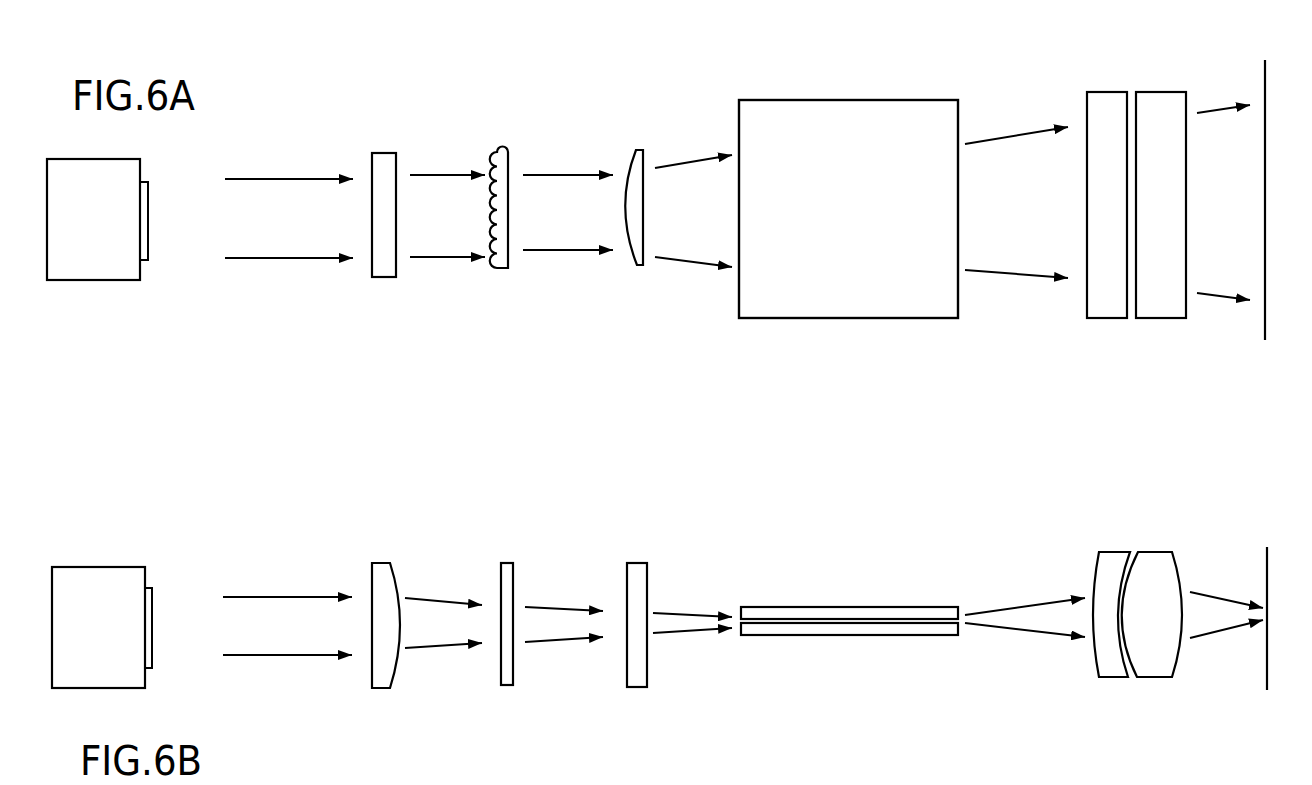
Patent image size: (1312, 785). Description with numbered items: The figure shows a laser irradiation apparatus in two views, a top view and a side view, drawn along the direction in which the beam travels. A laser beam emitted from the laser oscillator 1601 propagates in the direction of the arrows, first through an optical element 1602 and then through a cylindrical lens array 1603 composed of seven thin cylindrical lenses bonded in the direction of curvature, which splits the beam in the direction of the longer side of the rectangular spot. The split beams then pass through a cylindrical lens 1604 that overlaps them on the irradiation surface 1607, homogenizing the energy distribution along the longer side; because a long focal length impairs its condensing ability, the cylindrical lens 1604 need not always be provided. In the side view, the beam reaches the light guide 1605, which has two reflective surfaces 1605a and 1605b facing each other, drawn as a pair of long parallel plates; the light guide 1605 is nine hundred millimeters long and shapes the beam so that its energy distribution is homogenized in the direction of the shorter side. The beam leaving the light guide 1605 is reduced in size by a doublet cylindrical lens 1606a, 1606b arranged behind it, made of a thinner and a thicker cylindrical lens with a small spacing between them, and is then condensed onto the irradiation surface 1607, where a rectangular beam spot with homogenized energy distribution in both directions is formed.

In FIG. 6A, the laser oscillator 1601 is at (97, 316).
In FIG. 6B, the laser oscillator 1601 is at (102, 584).
In FIG. 6A, the collimator lens / optical element 1602 is at (386, 311).
In FIG. 6B, the collimator lens / optical element 1602 is at (386, 578).
In FIG. 6A, the cylindrical lens array 1603 is at (516, 308).
In FIG. 6B, the cylindrical lens array 1603 is at (507, 577).
In FIG. 6A, the cylindrical lens 1604 is at (641, 309).
In FIG. 6B, the cylindrical lens 1604 is at (637, 578).
In FIG. 6A, the light guide 1605 is at (902, 428).
In FIG. 6B, the light guide 1605 is at (849, 541).
In FIG. 6A, the reflective surface 1605a is at (857, 444).
In FIG. 6B, the reflective surface 1605a is at (849, 533).
In FIG. 6A, the reflective surface 1605b is at (857, 481).
In FIG. 6B, the reflective surface 1605b is at (849, 556).
In FIG. 6A, the doublet cylindrical lens 1606a is at (1092, 278).
In FIG. 6B, the doublet cylindrical lens 1606a is at (1111, 570).
In FIG. 6A, the doublet cylindrical lens 1606b is at (1185, 278).
In FIG. 6B, the doublet cylindrical lens 1606b is at (1152, 570).
In FIG. 6A, the irradiation surface 1607 is at (1288, 262).
In FIG. 6B, the irradiation surface 1607 is at (1277, 576).